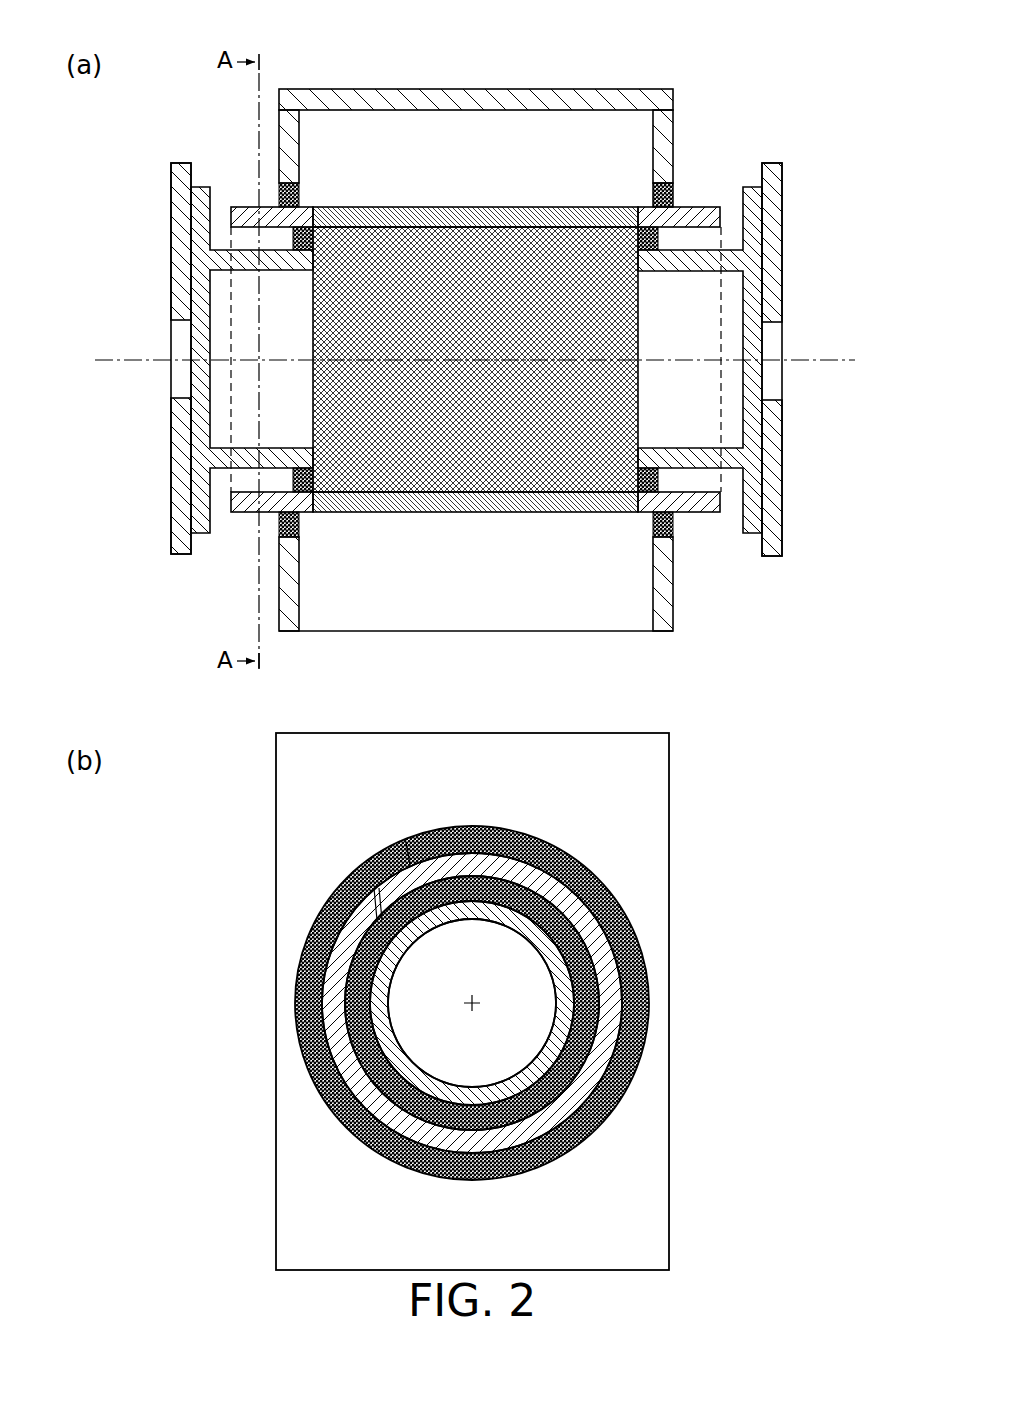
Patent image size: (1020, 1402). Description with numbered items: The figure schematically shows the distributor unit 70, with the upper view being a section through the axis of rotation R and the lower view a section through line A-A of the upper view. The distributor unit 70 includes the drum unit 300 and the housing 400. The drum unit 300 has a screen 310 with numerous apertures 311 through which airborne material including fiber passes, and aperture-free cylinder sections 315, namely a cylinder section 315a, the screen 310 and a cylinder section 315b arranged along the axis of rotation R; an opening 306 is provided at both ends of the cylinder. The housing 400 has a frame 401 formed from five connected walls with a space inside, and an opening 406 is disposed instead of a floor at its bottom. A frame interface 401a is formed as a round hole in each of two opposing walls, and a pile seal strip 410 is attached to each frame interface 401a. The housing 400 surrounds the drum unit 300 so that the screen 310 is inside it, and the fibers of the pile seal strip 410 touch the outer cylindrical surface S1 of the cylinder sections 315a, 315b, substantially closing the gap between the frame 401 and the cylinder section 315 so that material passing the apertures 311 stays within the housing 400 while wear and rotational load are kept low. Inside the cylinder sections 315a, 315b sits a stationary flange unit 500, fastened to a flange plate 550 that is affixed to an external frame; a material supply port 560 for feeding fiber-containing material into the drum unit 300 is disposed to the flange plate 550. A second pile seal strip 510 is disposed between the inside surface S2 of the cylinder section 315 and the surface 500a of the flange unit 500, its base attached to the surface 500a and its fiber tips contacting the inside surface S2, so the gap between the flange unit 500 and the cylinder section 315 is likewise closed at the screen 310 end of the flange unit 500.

The distributor unit 70 is at (833, 97).
The drum unit 300 is at (416, 156).
The opening 306 is at (250, 345).
The screen 310 is at (478, 204).
The apertures 311 is at (510, 207).
The cylinder section 315 is at (447, 867).
The cylinder section 315a is at (220, 570).
The cylinder section 315b is at (678, 212).
The housing 400 is at (652, 100).
The frame 401 is at (662, 103).
The frame interface 401a is at (649, 191).
The opening 406 is at (456, 607).
The pile seal strip 410 is at (298, 196).
The flange unit 500 is at (247, 268).
The surface 500a is at (704, 244).
The second pile seal strip 510 is at (294, 240).
The flange plate 550 is at (177, 198).
The material supply port 560 is at (180, 378).
The surface S1 is at (699, 212).
The inside surface S2 is at (699, 233).
The axis of rotation R is at (135, 358).